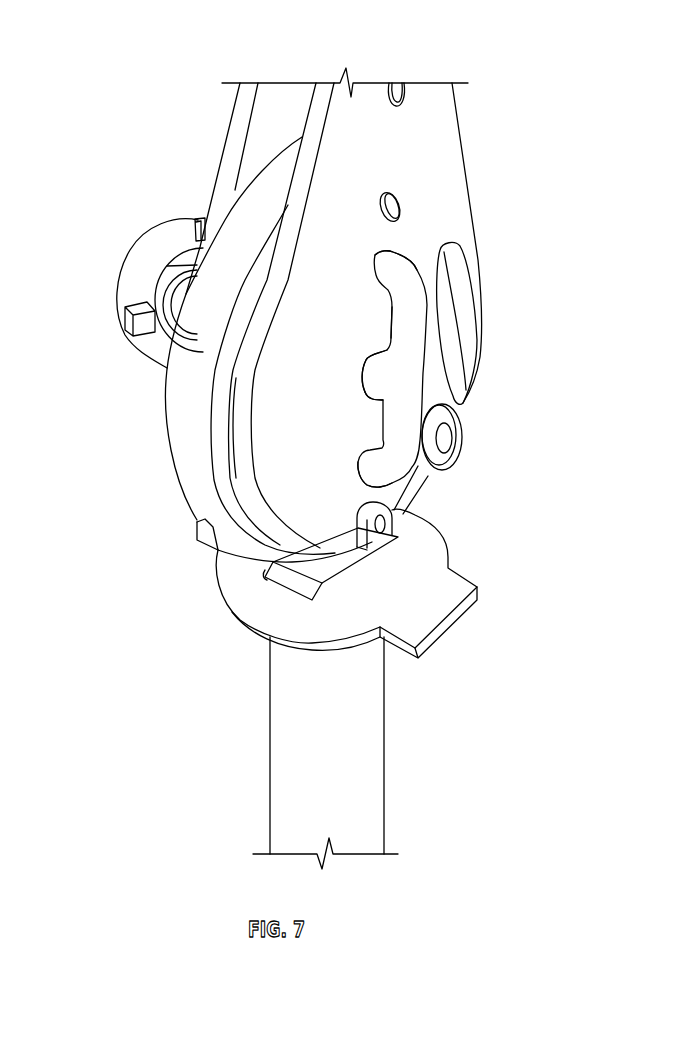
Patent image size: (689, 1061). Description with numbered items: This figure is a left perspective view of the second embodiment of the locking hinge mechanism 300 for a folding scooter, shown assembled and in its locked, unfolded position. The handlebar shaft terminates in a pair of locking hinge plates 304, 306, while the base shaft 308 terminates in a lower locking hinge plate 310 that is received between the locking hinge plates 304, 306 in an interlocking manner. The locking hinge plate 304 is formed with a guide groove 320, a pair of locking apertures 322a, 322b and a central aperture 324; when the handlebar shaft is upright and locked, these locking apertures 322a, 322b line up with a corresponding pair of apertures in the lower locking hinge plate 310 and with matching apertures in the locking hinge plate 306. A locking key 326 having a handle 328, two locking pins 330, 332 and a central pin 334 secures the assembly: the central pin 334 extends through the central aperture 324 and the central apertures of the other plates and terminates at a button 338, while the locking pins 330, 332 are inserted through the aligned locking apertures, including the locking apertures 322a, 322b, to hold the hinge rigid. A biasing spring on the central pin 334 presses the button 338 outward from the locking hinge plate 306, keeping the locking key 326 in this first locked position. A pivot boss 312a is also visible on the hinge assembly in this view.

The locking hinge mechanism 300 is at (108, 45).
The locking hinge plate 304 is at (258, 443).
The locking hinge plate 306 is at (222, 187).
The base shaft 308 is at (378, 732).
The lower locking hinge plate 310 is at (177, 449).
The pivot 312a is at (452, 447).
The guide groove 320 is at (463, 336).
The locking aperture 322a is at (380, 257).
The locking aperture 322b is at (361, 486).
The central aperture 324 is at (364, 370).
The locking key 326 is at (379, 328).
The handle 328 is at (414, 318).
The locking pin 330 is at (402, 263).
The locking pin 332 is at (424, 481).
The central pin 334 is at (367, 395).
The button 338 is at (121, 284).